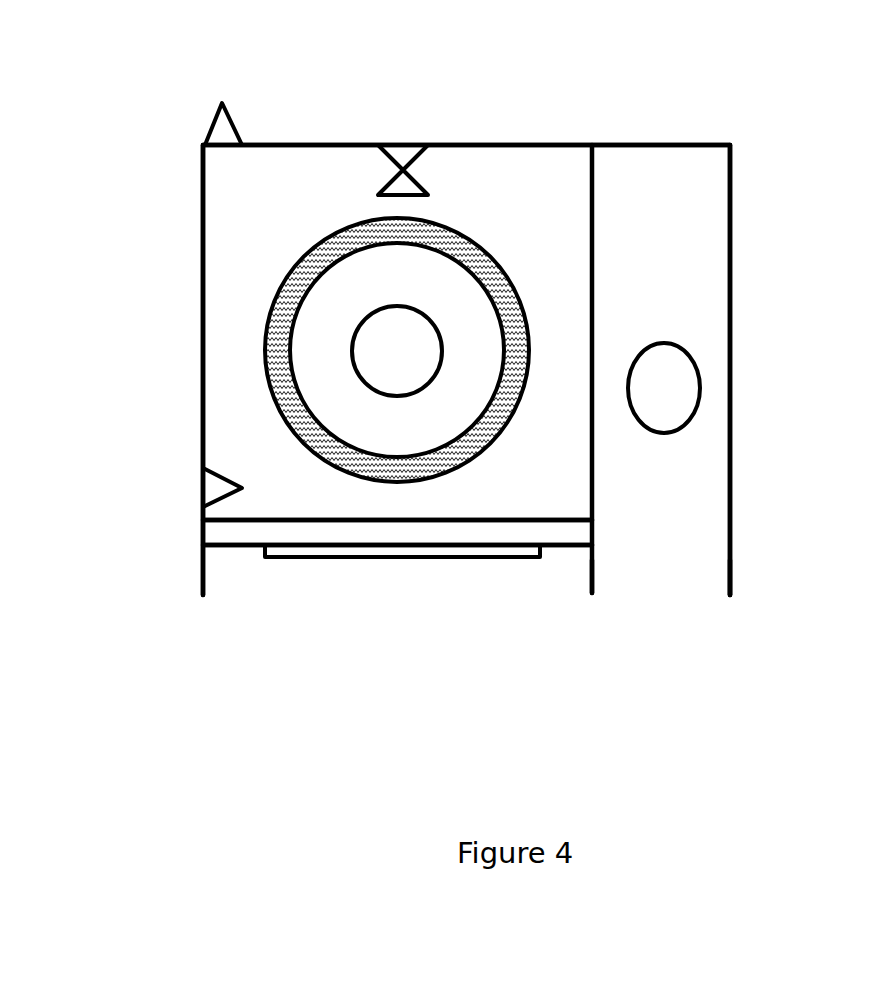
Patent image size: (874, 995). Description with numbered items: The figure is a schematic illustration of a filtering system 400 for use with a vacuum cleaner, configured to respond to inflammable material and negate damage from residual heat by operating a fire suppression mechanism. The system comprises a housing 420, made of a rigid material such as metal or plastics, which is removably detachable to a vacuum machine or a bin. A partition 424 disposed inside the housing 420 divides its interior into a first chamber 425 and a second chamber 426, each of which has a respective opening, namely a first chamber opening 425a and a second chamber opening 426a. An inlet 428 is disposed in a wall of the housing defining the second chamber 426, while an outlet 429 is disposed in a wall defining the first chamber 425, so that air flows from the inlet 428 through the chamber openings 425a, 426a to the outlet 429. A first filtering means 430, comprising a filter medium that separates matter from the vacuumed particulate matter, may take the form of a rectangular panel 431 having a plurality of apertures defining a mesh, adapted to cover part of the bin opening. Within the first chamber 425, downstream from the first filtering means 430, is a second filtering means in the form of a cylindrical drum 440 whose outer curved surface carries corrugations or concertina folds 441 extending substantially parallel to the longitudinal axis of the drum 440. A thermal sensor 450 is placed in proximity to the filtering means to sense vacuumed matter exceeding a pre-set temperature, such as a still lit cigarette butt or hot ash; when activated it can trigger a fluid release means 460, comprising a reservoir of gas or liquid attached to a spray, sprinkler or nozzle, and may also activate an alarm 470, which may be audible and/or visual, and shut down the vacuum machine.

The filtering system 400 is at (190, 432).
The housing 420 is at (572, 143).
The partition 424 is at (593, 565).
The first chamber 425 is at (245, 210).
The first chamber opening 425a is at (358, 595).
The second chamber 426 is at (712, 193).
The second chamber opening 426a is at (683, 583).
The inlet 428 is at (683, 390).
The outlet 429 is at (387, 347).
The first filtering means 430 is at (283, 553).
The rectangular panel 431 is at (563, 540).
The cylindrical drum 440 is at (468, 247).
The concertina folds 441 is at (293, 285).
The thermal sensor 450 is at (217, 490).
The fluid release means 460 is at (400, 160).
The alarm 470 is at (222, 104).